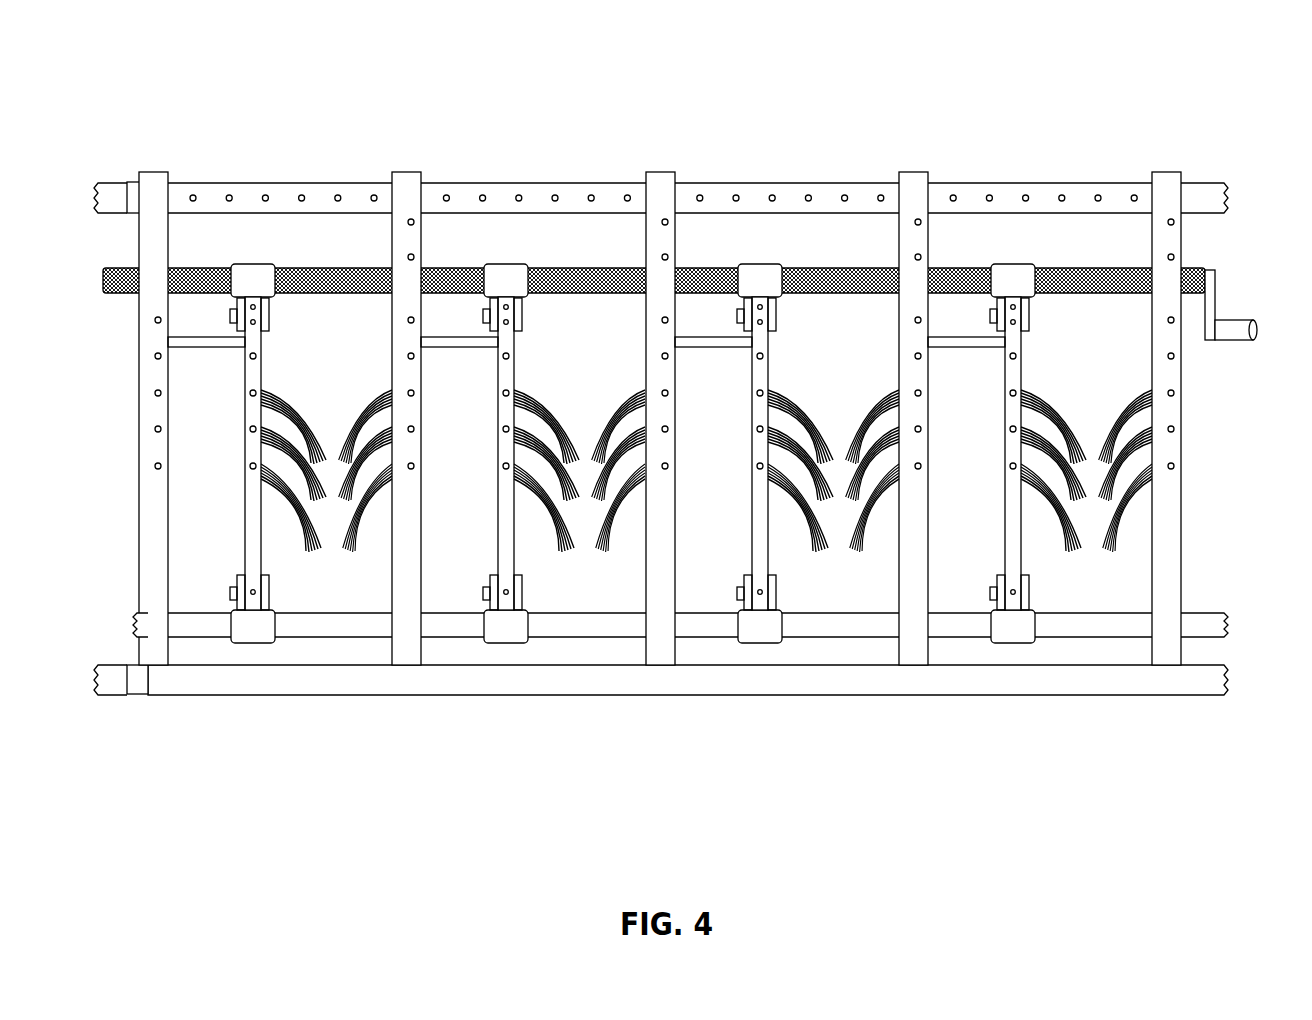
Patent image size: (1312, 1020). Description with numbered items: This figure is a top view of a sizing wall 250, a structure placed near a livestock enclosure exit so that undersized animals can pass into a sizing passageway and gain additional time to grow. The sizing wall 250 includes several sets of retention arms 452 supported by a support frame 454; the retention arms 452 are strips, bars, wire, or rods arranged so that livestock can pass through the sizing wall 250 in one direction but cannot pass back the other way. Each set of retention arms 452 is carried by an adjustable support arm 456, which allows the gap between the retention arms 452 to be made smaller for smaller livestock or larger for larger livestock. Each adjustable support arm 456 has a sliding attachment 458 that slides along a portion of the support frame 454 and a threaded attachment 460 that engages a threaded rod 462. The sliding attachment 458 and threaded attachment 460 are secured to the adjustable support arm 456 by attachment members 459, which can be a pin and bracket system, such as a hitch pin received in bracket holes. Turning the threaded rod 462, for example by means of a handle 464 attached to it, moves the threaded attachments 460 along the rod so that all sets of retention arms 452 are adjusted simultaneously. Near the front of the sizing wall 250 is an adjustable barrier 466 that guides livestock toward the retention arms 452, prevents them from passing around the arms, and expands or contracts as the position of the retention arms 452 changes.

The sizing wall 250 is at (303, 54).
The retention arms 452 is at (320, 527).
The support frame 454 is at (545, 183).
The adjustable support arms 456 is at (245, 530).
The sliding attachment 458 is at (255, 643).
The attachment members 459 is at (237, 307).
The threaded attachment 460 is at (253, 266).
The threaded rod 462 is at (1098, 268).
The handle 464 is at (1240, 322).
The adjustable barrier 466 is at (208, 338).